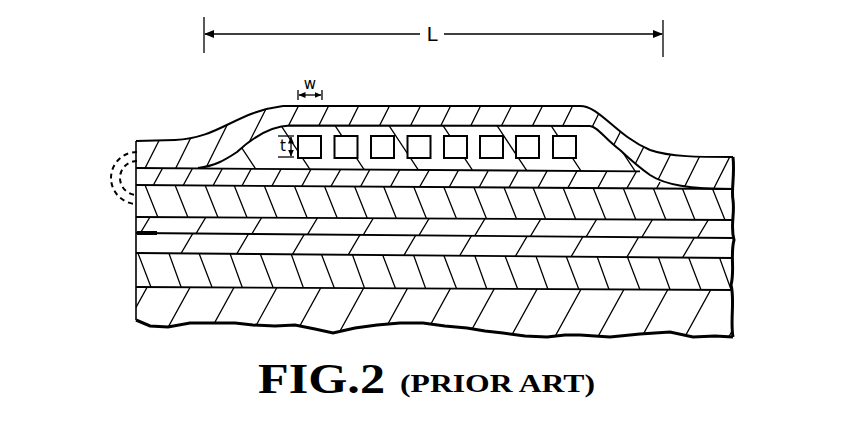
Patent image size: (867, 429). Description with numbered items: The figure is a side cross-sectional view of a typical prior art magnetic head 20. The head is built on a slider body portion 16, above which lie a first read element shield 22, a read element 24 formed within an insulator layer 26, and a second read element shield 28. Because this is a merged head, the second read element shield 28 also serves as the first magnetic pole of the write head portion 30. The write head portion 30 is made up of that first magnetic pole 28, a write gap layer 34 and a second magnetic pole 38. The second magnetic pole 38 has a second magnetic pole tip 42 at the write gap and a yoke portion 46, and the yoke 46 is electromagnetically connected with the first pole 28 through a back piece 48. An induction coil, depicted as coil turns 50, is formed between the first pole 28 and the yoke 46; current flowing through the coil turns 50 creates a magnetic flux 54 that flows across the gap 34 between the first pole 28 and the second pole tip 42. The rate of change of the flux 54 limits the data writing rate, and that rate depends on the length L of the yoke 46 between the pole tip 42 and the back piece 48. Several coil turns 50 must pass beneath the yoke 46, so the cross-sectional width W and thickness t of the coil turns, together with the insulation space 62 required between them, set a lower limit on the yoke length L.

The prior art magnetic head 20 is at (83, 90).
The slider body portion 16 is at (135, 307).
The first read element shield 22 is at (135, 270).
The read element 24 is at (146, 238).
The insulator layer 26 is at (135, 225).
The second read element shield 28 is at (135, 207).
The write head portion 30 is at (72, 197).
The write gap layer 34 is at (197, 175).
The second magnetic pole 38 is at (237, 117).
The second magnetic pole tip 42 is at (167, 139).
The yoke portion 46 is at (460, 105).
The back piece 48 is at (738, 168).
The coil turns 50 is at (347, 145).
The magnetic flux 54 is at (127, 157).
The insulation space 62 is at (330, 147).